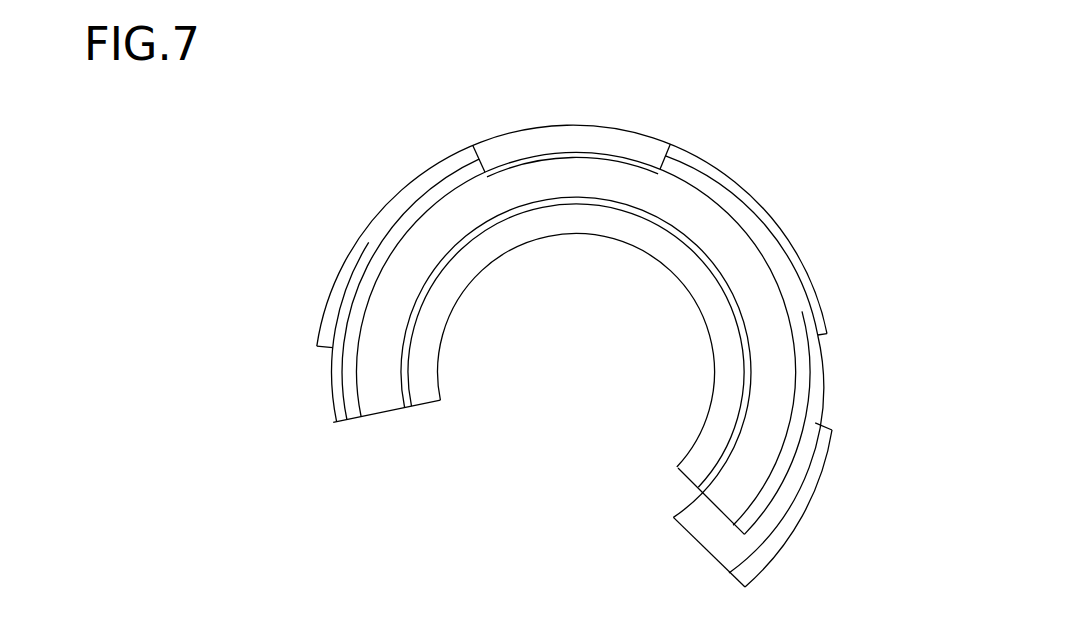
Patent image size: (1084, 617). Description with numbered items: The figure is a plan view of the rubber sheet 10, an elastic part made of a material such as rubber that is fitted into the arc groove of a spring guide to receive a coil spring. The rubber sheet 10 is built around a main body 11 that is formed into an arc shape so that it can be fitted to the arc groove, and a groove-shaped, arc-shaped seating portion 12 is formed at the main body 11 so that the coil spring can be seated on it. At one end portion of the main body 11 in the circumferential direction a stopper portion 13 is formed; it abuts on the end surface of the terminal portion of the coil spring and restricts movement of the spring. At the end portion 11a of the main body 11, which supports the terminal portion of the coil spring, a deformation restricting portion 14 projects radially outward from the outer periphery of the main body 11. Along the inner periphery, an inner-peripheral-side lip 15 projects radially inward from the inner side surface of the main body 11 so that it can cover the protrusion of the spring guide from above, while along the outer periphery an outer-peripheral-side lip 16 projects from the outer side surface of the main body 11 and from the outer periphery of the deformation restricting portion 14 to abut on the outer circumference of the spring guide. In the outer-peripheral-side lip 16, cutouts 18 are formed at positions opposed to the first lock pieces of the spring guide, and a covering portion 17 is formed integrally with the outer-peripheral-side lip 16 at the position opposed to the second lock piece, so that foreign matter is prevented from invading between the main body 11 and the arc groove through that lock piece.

The rubber sheet 10 is at (298, 190).
The main body 11 is at (624, 382).
The end portion 11a is at (770, 490).
The arc-shaped seating portion 12 is at (728, 245).
The stopper portion 13 is at (708, 512).
The deformation restricting portion 14 is at (750, 540).
The inner-peripheral-side lip 15 is at (619, 232).
The outer-peripheral-side lip 16 is at (338, 293).
The covering portion 17 is at (548, 140).
The cutouts 18 is at (333, 383).